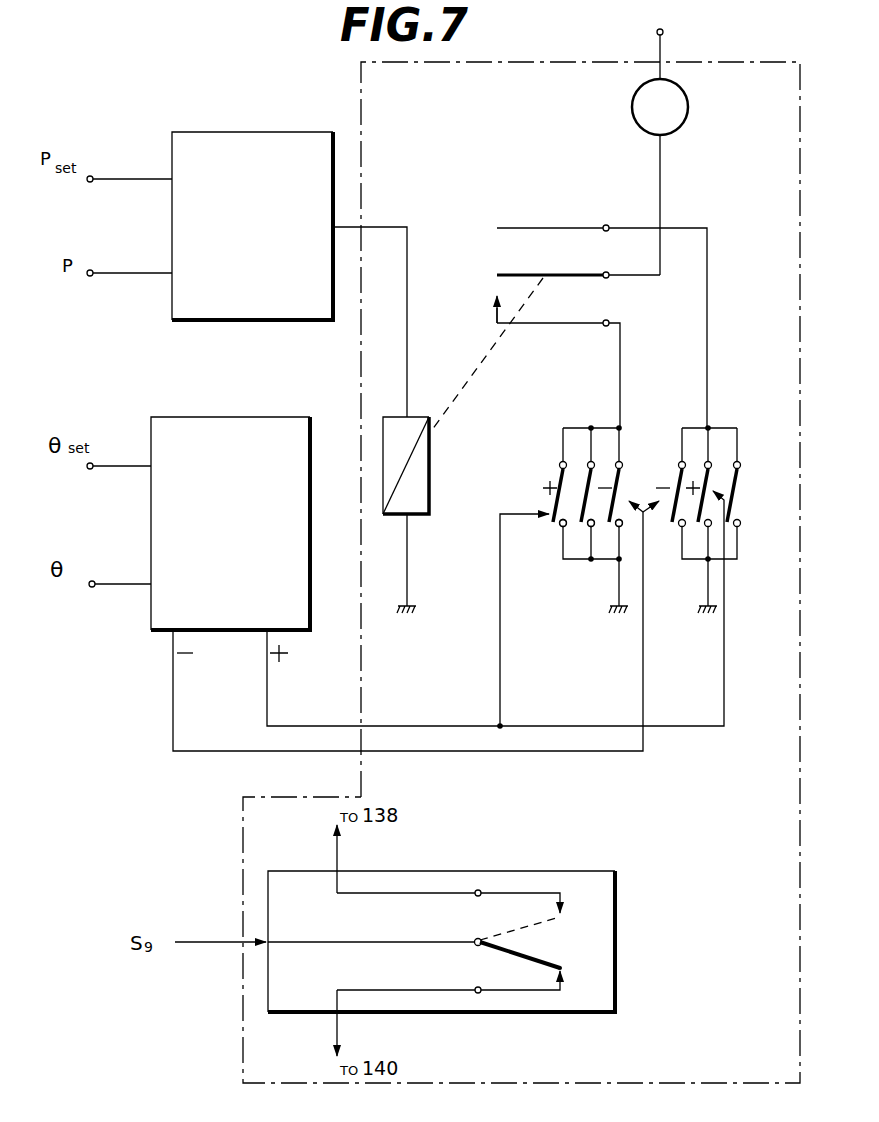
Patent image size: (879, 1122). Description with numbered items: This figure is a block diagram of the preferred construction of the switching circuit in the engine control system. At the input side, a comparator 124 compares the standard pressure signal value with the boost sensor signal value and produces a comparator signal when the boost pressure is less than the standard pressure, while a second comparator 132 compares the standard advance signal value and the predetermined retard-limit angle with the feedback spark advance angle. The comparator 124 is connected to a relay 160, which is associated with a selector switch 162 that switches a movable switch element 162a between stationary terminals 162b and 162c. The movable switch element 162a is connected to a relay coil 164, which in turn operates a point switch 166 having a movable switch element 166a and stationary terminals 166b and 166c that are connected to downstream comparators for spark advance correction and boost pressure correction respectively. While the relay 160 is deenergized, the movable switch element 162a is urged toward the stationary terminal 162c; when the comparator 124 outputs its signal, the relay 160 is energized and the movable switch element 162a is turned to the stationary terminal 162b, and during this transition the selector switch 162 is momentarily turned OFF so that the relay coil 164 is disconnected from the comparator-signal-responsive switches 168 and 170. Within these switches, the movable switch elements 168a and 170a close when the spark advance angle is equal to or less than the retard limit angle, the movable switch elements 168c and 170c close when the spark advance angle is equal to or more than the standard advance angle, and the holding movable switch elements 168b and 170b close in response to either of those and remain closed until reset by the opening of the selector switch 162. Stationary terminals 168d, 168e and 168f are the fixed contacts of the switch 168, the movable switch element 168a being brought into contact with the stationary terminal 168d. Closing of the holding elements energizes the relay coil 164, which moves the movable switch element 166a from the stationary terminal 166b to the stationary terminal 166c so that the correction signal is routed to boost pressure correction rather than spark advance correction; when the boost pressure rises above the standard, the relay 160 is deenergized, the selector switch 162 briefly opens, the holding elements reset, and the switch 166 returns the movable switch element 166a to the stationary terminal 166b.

The comparator 124 is at (277, 320).
The comparator 132 is at (310, 562).
The relay 160 is at (430, 480).
The selector switch 162 is at (529, 244).
The movable switch element 162a is at (570, 273).
The stationary terminal 162b is at (498, 310).
The stationary terminal 162c is at (498, 250).
The relay coil 164 is at (678, 128).
The point switch 166 is at (474, 940).
The movable switch element 166a is at (525, 963).
The stationary terminal 166b is at (562, 967).
The stationary terminal 166c is at (562, 916).
The comparator-signal-responsive switch 168 is at (594, 504).
The movable switch element 168a is at (553, 498).
The holding movable switch element 168b is at (589, 476).
The movable switch element 168c is at (617, 486).
The stationary terminal 168d is at (562, 528).
The switch contact 168e is at (591, 528).
The switch contact 168f is at (623, 525).
The comparator-signal-responsive switch 170 is at (720, 490).
The movable switch element 170a is at (679, 475).
The holding movable switch element 170b is at (706, 478).
The movable switch element 170c is at (732, 496).